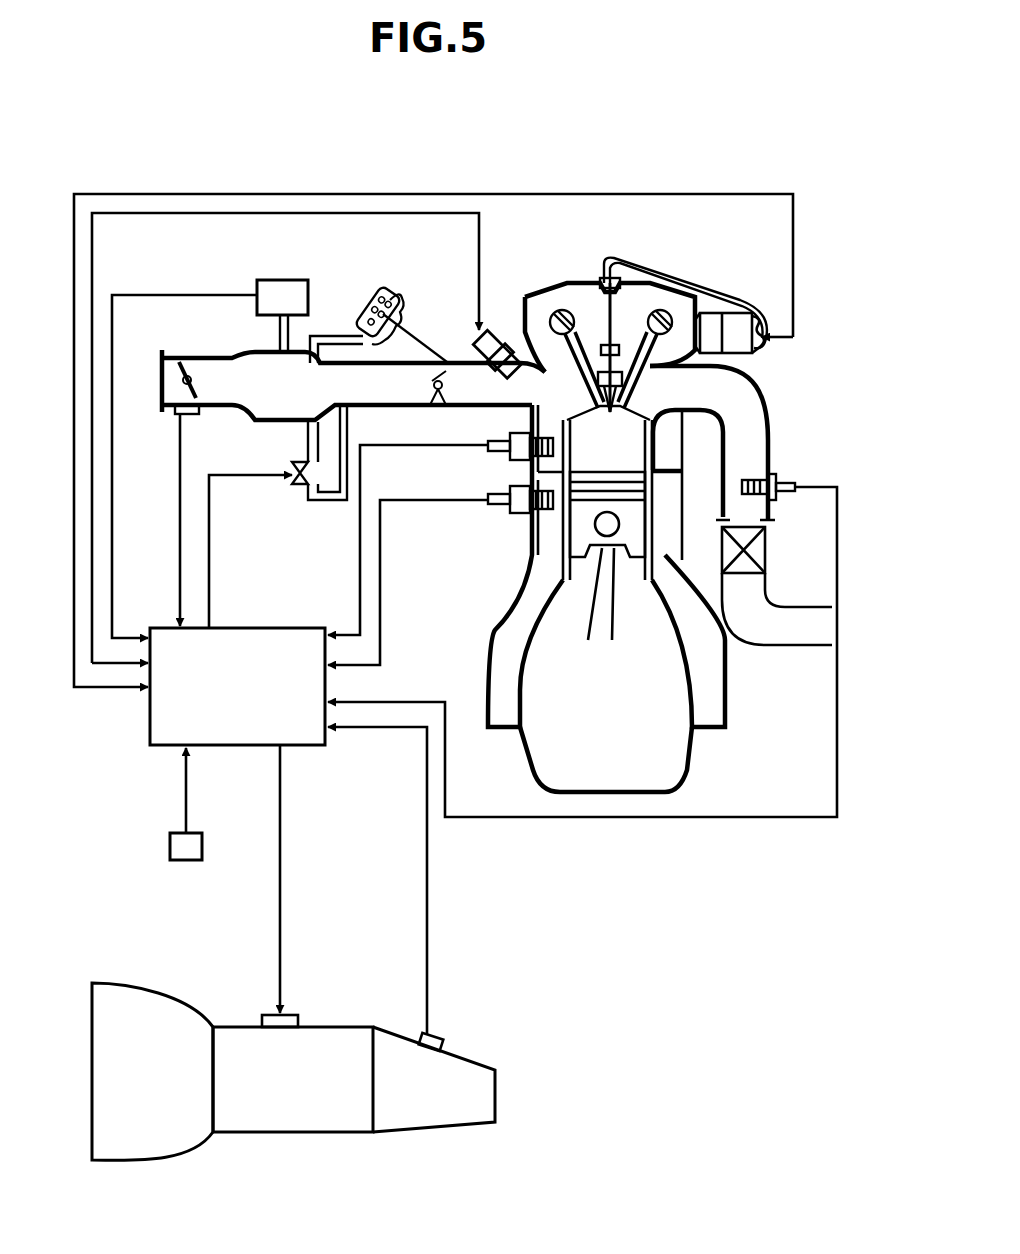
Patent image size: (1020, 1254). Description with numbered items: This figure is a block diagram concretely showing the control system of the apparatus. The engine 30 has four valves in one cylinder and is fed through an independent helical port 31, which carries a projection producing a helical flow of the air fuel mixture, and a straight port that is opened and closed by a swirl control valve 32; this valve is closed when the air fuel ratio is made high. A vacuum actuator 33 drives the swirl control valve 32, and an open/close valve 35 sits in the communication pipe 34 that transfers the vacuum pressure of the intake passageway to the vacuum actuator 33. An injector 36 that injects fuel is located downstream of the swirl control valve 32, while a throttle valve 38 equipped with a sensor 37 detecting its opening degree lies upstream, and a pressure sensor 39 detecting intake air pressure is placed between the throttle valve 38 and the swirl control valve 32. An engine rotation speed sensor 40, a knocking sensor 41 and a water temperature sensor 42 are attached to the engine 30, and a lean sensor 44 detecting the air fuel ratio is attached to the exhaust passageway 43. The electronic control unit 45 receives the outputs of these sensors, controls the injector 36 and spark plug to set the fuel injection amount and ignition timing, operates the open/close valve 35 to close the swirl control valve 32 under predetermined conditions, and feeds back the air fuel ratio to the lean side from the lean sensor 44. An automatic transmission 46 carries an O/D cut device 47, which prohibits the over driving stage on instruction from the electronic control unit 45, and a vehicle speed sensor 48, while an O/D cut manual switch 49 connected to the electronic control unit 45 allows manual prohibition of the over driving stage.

The engine 30 is at (683, 768).
The helical port 31 is at (540, 378).
The swirl control valve 32 is at (447, 407).
The vacuum actuator 33 is at (382, 292).
The communication pipe 34 is at (322, 502).
The open/close valve 35 is at (296, 472).
The injector 36 is at (478, 340).
The sensor 37 is at (196, 414).
The throttle valve 38 is at (180, 364).
The pressure sensor 39 is at (284, 272).
The engine rotation speed sensor 40 is at (754, 356).
The knocking sensor 41 is at (500, 460).
The water temperature sensor 42 is at (500, 508).
The exhaust passageway 43 is at (772, 455).
The lean sensor 44 is at (776, 500).
The electronic control unit 45 is at (257, 627).
The automatic transmission 46 is at (284, 1132).
The O/D cut device 47 is at (298, 1016).
The vehicle speed sensor 48 is at (442, 1040).
The O/D cut manual switch 49 is at (185, 862).